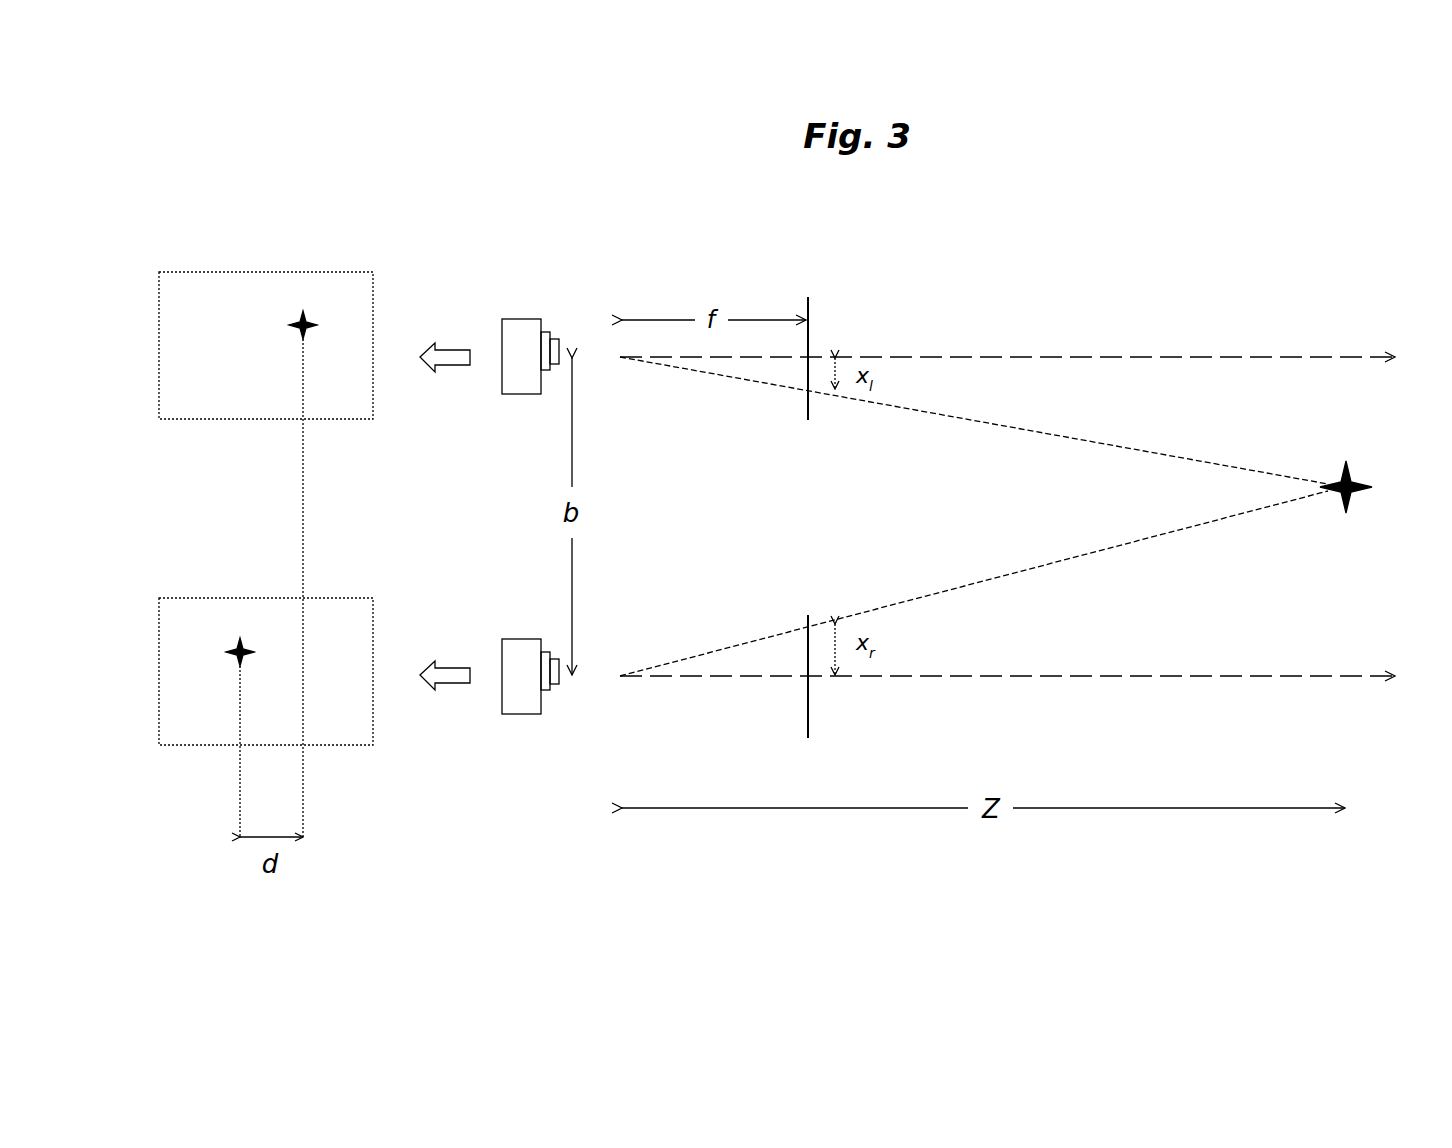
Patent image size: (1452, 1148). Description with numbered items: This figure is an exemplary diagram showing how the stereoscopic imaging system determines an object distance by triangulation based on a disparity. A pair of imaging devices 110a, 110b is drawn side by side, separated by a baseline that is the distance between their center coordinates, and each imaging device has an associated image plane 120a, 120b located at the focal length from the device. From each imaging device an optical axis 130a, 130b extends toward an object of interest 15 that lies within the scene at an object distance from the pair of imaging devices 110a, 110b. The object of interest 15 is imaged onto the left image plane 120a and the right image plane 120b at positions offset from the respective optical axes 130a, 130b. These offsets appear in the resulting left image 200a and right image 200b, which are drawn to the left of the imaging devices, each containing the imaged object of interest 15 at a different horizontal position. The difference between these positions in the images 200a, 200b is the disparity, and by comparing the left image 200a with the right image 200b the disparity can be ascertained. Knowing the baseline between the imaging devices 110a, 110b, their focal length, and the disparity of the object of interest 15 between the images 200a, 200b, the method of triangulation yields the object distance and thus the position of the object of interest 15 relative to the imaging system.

The left image 200a is at (268, 272).
The right image 200b is at (267, 598).
The imaging device 110a is at (522, 318).
The imaging device 110b is at (522, 638).
The left image plane 120a is at (808, 300).
The right image plane 120b is at (808, 618).
The left optical axis 130a is at (1358, 357).
The right optical axis 130b is at (1358, 676).
The object of interest 15 is at (1344, 522).